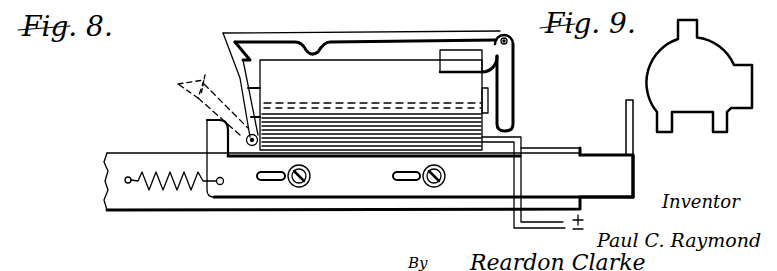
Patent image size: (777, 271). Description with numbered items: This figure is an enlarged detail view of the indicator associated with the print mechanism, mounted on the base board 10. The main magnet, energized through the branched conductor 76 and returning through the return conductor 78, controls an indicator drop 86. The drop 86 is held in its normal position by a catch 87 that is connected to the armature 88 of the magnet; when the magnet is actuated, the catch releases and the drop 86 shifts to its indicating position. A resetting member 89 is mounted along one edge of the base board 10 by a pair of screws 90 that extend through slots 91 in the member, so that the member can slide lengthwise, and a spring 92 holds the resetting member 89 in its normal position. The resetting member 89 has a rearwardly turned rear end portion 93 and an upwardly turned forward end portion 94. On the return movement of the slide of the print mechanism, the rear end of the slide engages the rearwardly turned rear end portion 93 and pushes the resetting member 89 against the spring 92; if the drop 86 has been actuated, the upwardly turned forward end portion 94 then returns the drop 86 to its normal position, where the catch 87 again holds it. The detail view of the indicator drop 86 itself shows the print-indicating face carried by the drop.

In FIG. 8, the base board 10 is at (330, 210).
In FIG. 8, the branched conductor 76 is at (521, 183).
In FIG. 8, the return conductor 78 is at (514, 182).
In FIG. 8, the indicator drop 86 is at (240, 77).
In FIG. 9, the indicator drop 86 is at (655, 76).
In FIG. 8, the catch 87 is at (377, 38).
In FIG. 8, the armature 88 is at (512, 96).
In FIG. 8, the resetting member 89 is at (368, 182).
In FIG. 8, the screws 90 is at (297, 188).
In FIG. 8, the slots 91 is at (270, 183).
In FIG. 8, the spring 92 is at (171, 186).
In FIG. 8, the rearwardly turned rear end portion 93 is at (626, 132).
In FIG. 8, the upwardly turned forward end portion 94 is at (207, 132).